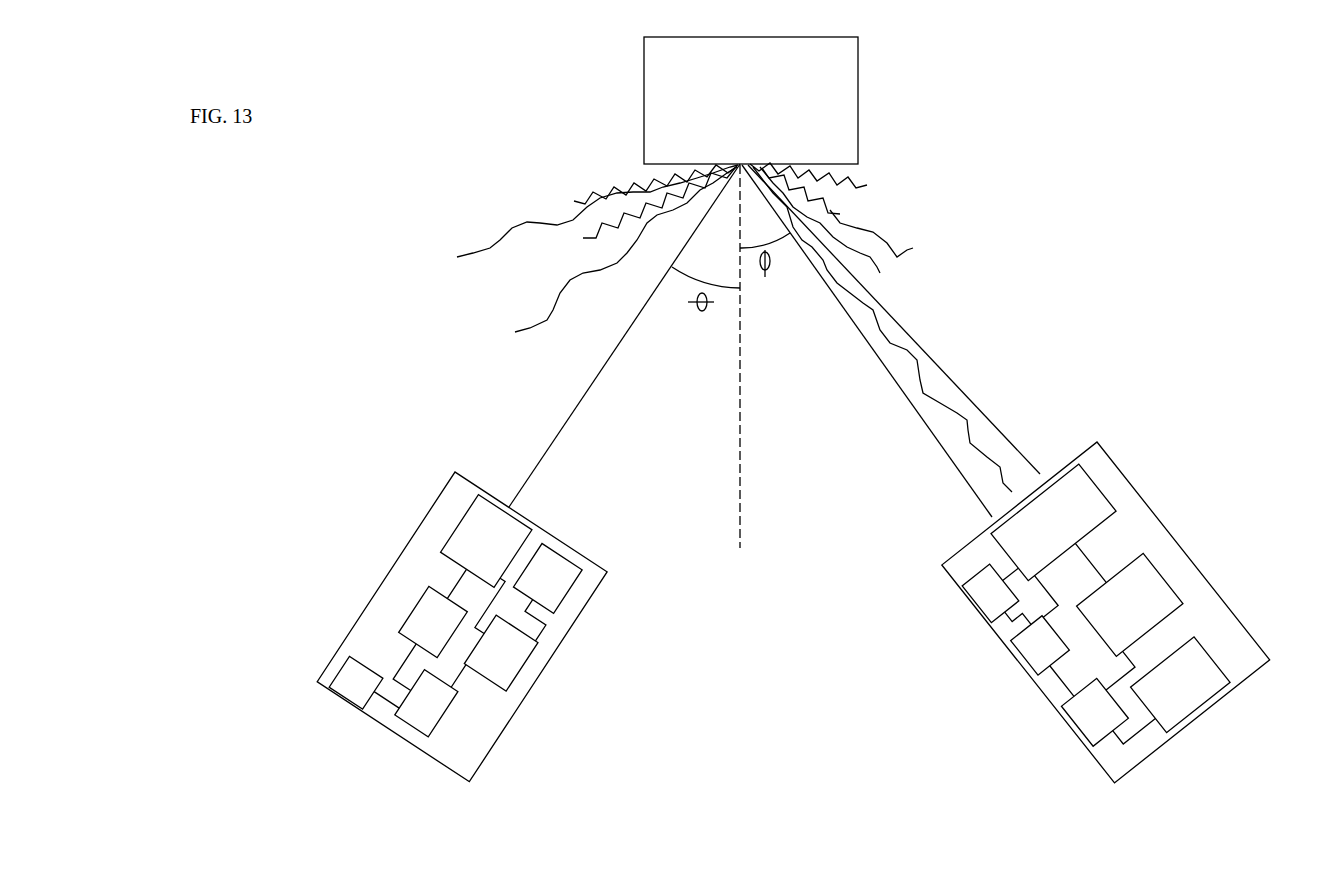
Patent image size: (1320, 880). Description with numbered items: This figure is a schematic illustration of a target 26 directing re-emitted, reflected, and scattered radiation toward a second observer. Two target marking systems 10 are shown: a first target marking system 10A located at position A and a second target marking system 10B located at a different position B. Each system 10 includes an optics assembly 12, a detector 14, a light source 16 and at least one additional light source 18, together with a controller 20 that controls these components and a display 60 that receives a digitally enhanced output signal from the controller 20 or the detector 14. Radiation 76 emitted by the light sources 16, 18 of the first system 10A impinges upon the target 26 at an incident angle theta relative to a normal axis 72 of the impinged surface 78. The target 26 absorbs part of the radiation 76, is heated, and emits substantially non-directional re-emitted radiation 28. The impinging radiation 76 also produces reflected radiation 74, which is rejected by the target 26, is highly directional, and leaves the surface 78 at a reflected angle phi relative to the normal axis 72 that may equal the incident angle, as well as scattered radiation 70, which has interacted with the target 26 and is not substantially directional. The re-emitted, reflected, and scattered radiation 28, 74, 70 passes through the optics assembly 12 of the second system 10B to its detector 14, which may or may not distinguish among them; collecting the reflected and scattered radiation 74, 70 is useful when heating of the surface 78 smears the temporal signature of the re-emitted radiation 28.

The target marking system 10 is at (776, 612).
The first target marking system 10A is at (372, 593).
The second target marking system 10B is at (1178, 542).
The optics assembly 12 is at (474, 552).
The detector 14 is at (421, 633).
The light source 16 is at (489, 664).
The additional light source 18 is at (536, 589).
The controller 20 is at (414, 714).
The target 26 is at (738, 119).
The re-emitted radiation 28 is at (588, 192).
The display 60 is at (344, 694).
The scattered radiation 70 is at (515, 227).
The normal axis 72 is at (741, 420).
The reflected radiation 74 is at (950, 459).
The radiation 76 is at (563, 431).
The impinged surface 78 is at (840, 173).